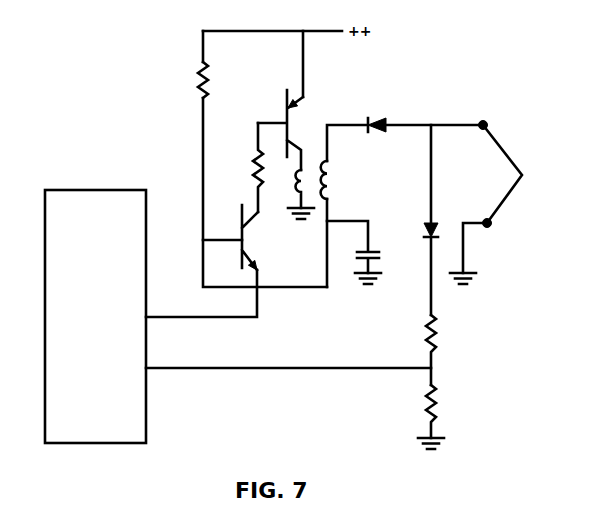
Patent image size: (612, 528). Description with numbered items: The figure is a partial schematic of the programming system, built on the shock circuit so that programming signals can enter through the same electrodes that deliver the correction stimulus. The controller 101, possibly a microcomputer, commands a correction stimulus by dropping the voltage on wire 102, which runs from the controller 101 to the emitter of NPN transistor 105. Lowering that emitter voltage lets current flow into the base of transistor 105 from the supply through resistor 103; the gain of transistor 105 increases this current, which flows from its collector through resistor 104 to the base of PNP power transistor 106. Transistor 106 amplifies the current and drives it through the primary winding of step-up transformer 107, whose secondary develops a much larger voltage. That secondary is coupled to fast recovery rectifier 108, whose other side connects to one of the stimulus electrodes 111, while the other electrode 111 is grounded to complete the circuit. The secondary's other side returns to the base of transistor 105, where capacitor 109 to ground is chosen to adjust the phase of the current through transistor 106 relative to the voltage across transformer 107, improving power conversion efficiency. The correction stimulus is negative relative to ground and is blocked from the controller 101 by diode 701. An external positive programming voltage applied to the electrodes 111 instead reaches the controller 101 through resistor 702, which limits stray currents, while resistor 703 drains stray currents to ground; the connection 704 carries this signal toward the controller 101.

The controller 101 is at (80, 188).
The wire 102 is at (182, 318).
The resistor 103 is at (198, 72).
The resistor 104 is at (257, 162).
The NPN transistor 105 is at (250, 230).
The PNP power transistor 106 is at (291, 107).
The step-up transformer 107 is at (329, 185).
The fast recovery rectifier 108 is at (377, 114).
The capacitor 109 is at (380, 253).
The stimulus electrodes 111 is at (503, 203).
The diode 701 is at (437, 218).
The resistor 702 is at (440, 338).
The resistor 703 is at (440, 405).
The feedback line 704 is at (230, 370).